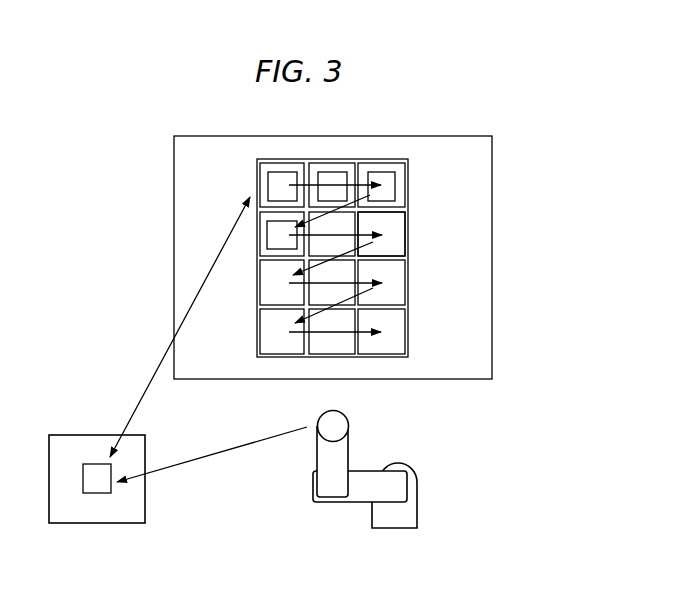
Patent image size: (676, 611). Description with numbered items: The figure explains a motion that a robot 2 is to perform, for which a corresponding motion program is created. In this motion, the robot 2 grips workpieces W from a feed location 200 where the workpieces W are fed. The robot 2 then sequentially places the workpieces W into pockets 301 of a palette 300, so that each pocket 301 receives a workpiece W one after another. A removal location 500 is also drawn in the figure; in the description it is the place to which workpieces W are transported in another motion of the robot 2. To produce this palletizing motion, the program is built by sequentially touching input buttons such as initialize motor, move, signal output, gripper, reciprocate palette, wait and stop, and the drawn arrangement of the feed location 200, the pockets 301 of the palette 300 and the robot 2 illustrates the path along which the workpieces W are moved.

The workpiece W is at (283, 180).
The robot 2 is at (402, 512).
The feed location 200 is at (67, 500).
The palette 300 is at (412, 283).
The pocket 301 is at (393, 226).
The removal location 500 is at (453, 332).